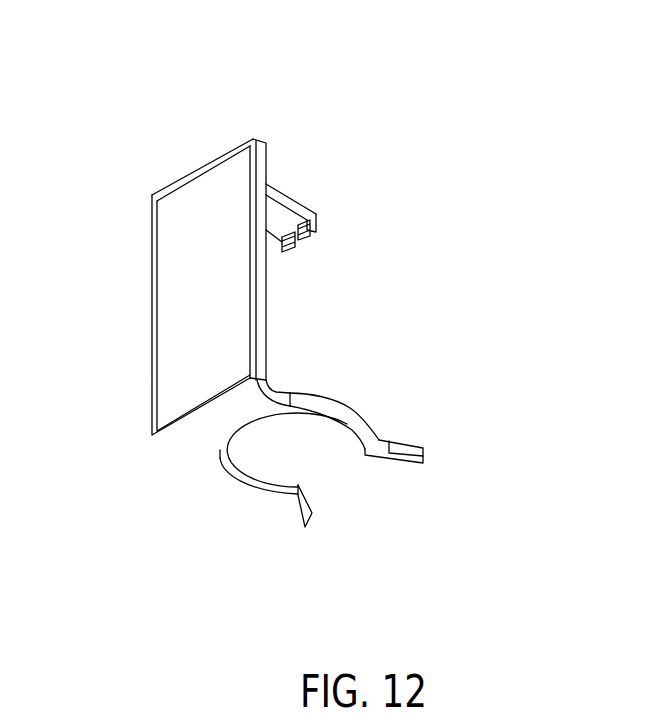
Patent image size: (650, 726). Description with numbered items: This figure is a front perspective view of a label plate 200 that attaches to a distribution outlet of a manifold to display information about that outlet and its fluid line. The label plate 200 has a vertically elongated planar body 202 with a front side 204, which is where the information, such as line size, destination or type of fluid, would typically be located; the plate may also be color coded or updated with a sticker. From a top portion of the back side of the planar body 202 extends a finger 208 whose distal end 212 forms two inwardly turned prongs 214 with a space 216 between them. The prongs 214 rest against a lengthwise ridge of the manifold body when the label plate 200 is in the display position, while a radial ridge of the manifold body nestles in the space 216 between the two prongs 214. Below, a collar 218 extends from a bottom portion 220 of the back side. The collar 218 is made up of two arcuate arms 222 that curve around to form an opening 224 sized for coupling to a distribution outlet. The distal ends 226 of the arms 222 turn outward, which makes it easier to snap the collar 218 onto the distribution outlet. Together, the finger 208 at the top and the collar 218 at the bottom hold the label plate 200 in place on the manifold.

The label plate 200 is at (52, 70).
The planar body 202 is at (260, 341).
The front side 204 is at (170, 380).
The finger 208 is at (292, 196).
The distal end 212 is at (316, 215).
The prongs 214 is at (317, 232).
The space 216 is at (304, 242).
The collar 218 is at (240, 495).
The bottom portion 220 is at (183, 426).
The arcuate arms 222 is at (325, 402).
The opening 224 is at (292, 460).
The distal ends 226 is at (426, 453).